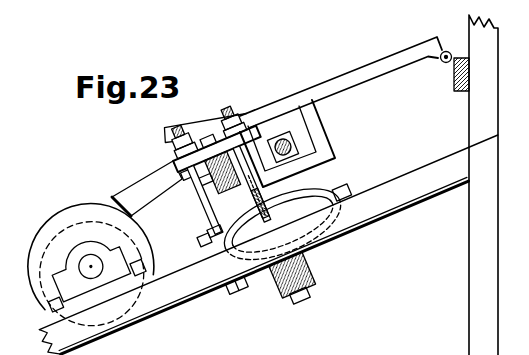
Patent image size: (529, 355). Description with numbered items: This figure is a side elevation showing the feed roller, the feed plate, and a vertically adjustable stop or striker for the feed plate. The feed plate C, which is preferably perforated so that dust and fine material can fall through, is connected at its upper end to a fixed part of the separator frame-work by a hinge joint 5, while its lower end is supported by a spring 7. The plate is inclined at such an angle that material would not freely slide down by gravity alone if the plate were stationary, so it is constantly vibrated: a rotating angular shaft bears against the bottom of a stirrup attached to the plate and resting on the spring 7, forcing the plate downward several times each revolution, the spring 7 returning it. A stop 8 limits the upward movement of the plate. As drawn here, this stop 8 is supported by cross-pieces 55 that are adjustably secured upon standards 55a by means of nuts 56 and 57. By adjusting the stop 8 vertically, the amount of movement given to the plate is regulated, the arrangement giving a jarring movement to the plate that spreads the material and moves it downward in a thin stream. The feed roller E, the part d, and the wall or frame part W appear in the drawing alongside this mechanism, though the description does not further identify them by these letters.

The hinge joint 5 is at (455, 63).
The spring 7 is at (299, 244).
The stop 8 is at (206, 204).
The cross-pieces 55 is at (168, 165).
The standards 55a is at (207, 232).
The nuts 56 is at (172, 156).
The nuts 57 is at (200, 190).
The feed plate C is at (341, 112).
The link d is at (141, 188).
The eccentric E is at (26, 263).
The wall W is at (461, 185).